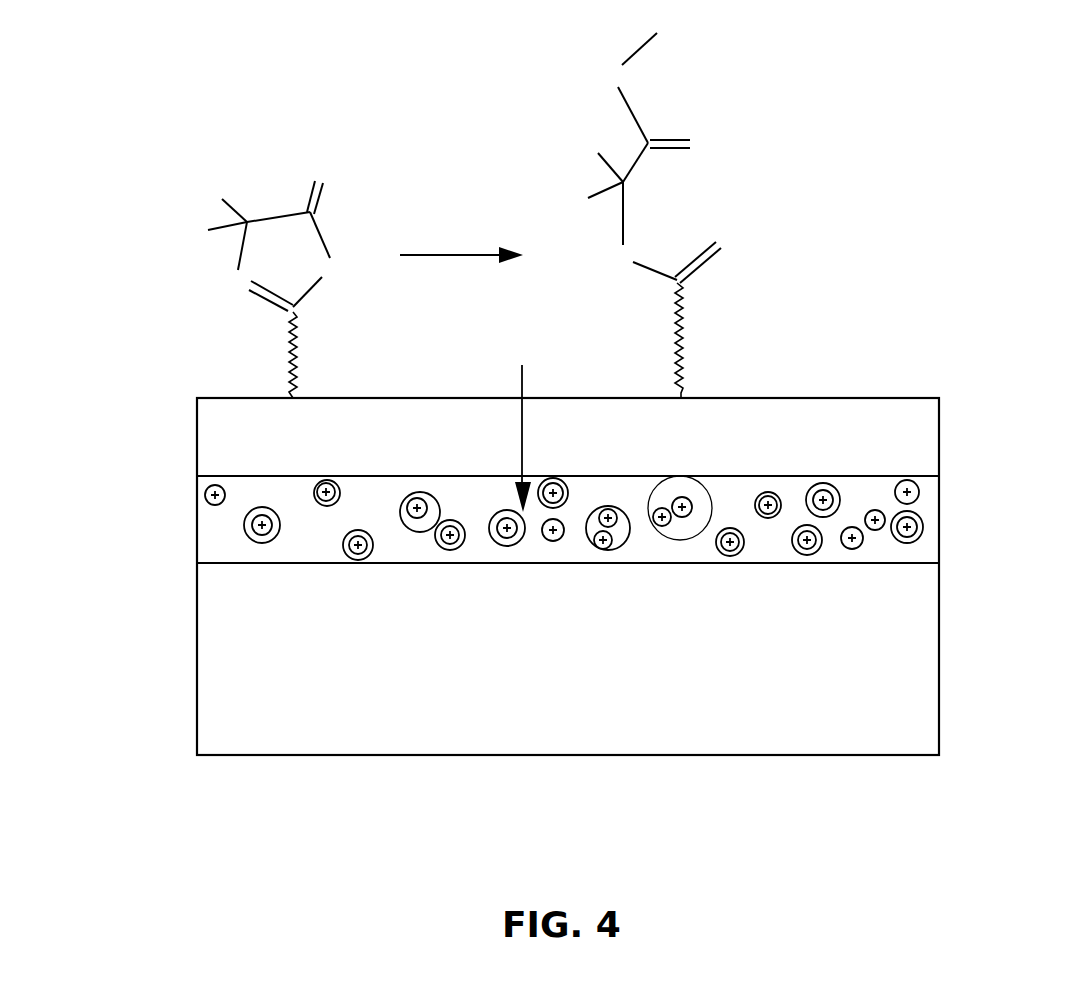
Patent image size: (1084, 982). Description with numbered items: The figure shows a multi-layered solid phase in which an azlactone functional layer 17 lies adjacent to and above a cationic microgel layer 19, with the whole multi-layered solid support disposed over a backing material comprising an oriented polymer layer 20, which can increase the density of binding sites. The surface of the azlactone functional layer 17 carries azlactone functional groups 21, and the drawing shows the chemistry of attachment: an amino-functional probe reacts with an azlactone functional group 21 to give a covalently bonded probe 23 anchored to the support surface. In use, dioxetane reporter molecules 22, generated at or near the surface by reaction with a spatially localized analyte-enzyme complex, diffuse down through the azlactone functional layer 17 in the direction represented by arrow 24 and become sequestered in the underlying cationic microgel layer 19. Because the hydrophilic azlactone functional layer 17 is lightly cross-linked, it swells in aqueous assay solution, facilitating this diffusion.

The azlactone functional layer 17 is at (236, 433).
The cationic microgel layer 19 is at (217, 530).
The oriented polymer layer 20 is at (568, 576).
The azlactone functional group 21 is at (147, 262).
The dioxetane reporter molecule 22 is at (518, 338).
The covalently bonded probe 23 is at (552, 126).
The arrow 24 is at (535, 442).